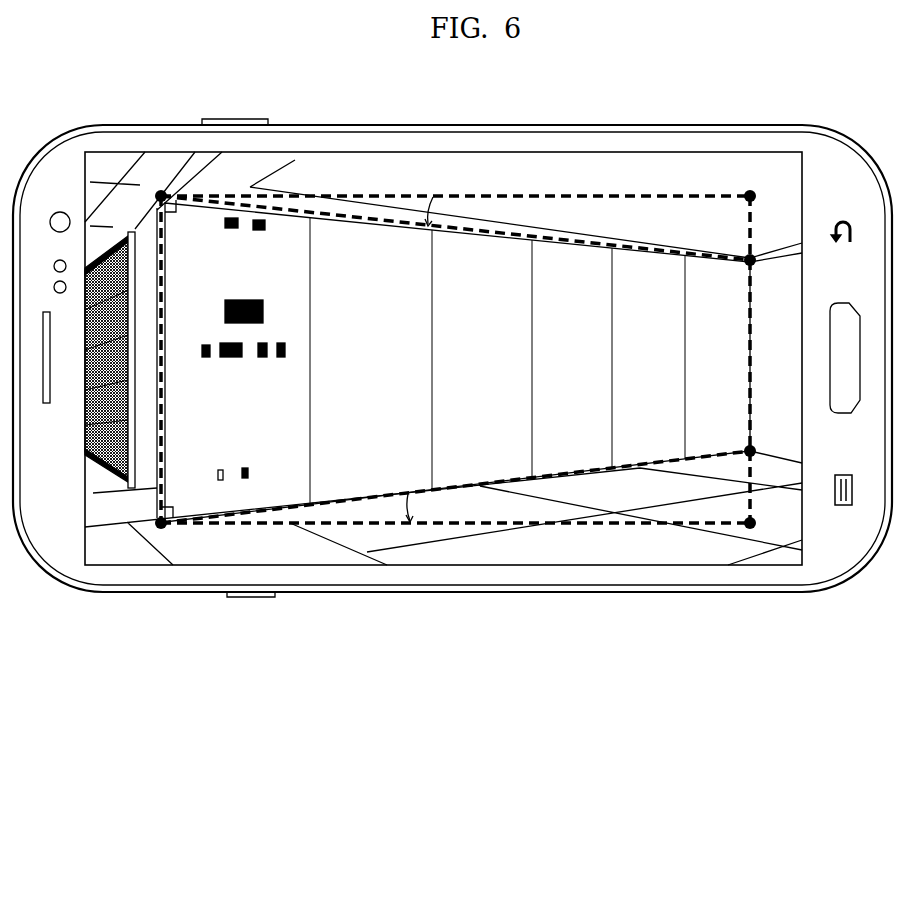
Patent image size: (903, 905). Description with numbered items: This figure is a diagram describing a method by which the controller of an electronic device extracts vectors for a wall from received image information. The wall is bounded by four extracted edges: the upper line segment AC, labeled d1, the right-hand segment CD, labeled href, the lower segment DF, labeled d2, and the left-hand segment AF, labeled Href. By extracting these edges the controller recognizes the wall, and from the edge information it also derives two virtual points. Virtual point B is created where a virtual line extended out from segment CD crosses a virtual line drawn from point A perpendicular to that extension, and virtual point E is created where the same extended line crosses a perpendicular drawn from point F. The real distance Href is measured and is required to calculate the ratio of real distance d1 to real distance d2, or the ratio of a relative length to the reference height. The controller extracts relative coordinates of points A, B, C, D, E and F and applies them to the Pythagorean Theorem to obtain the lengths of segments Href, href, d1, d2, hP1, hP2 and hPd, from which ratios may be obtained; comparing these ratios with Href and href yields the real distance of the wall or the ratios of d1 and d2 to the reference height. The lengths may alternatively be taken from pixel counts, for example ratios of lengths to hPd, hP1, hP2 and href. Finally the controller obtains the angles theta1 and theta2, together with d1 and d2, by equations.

The point A is at (155, 189).
The virtual point B is at (759, 188).
The point C is at (759, 270).
The point D is at (760, 444).
The virtual point E is at (758, 527).
The point F is at (154, 532).
The line segment hpd hPd is at (455, 178).
The line segment hp1 hP1 is at (771, 228).
The line segment CD href is at (773, 355).
The line segment hp2 hP2 is at (771, 487).
The real distance Href (line segment AF) Href is at (147, 359).
The line segment AC d1 is at (455, 228).
The line segment DF d2 is at (455, 487).
The angle θ1 theta1 is at (441, 211).
The angle θ2 theta2 is at (421, 508).